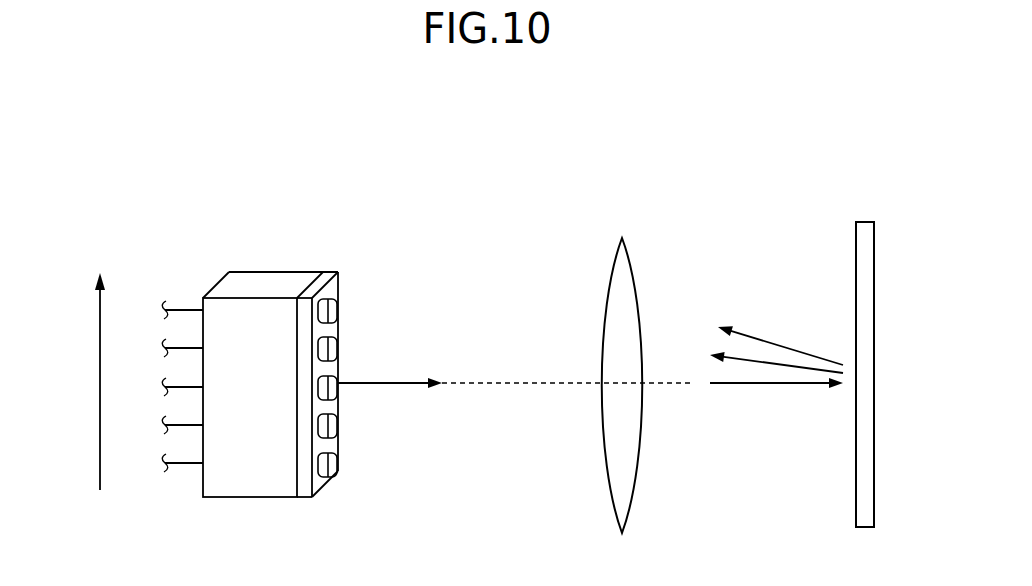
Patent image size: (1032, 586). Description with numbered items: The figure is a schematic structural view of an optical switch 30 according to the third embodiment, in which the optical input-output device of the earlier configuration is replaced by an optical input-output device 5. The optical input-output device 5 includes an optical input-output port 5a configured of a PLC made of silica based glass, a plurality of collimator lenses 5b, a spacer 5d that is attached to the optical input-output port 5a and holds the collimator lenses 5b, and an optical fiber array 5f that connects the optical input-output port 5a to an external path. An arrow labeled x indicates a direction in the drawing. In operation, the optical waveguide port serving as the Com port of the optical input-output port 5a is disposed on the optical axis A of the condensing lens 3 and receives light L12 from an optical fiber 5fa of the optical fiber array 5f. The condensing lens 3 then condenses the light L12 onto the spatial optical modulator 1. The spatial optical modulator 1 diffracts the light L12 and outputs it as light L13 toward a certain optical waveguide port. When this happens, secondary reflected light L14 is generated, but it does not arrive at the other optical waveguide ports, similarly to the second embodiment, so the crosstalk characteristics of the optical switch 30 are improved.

The optical switch 30 is at (793, 133).
The spatial optical modulator 1 is at (864, 222).
The condensing lens 3 is at (622, 238).
The optical input-output device 5 is at (263, 331).
The optical input-output port 5a is at (263, 288).
The collimator lenses 5b is at (352, 300).
The spacer 5d is at (324, 279).
The optical fiber array 5f is at (162, 350).
The optical fiber 5fa is at (176, 386).
The light L12 is at (389, 380).
The light L13 is at (750, 360).
The secondary reflected light L14 is at (815, 352).
The optical axis A is at (500, 382).
The x direction x is at (99, 368).